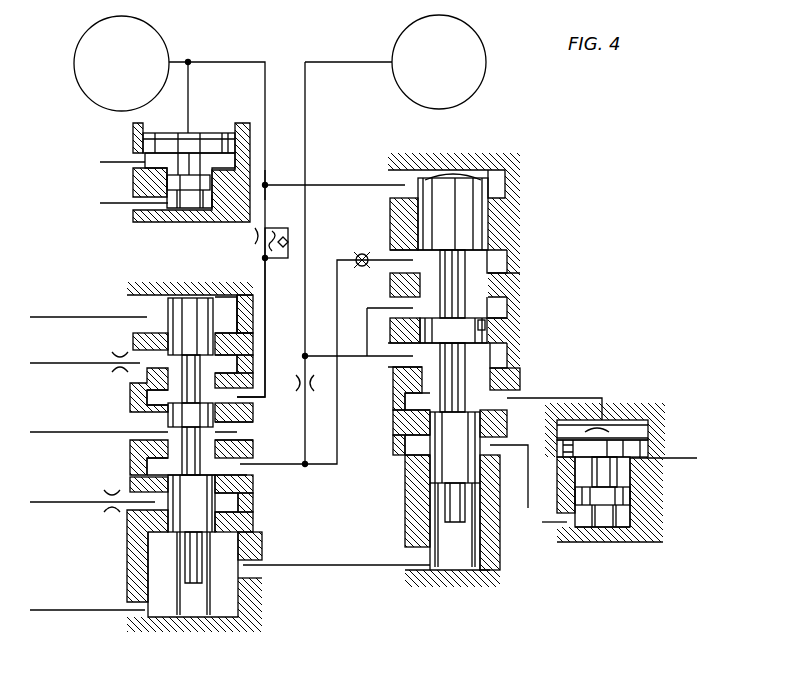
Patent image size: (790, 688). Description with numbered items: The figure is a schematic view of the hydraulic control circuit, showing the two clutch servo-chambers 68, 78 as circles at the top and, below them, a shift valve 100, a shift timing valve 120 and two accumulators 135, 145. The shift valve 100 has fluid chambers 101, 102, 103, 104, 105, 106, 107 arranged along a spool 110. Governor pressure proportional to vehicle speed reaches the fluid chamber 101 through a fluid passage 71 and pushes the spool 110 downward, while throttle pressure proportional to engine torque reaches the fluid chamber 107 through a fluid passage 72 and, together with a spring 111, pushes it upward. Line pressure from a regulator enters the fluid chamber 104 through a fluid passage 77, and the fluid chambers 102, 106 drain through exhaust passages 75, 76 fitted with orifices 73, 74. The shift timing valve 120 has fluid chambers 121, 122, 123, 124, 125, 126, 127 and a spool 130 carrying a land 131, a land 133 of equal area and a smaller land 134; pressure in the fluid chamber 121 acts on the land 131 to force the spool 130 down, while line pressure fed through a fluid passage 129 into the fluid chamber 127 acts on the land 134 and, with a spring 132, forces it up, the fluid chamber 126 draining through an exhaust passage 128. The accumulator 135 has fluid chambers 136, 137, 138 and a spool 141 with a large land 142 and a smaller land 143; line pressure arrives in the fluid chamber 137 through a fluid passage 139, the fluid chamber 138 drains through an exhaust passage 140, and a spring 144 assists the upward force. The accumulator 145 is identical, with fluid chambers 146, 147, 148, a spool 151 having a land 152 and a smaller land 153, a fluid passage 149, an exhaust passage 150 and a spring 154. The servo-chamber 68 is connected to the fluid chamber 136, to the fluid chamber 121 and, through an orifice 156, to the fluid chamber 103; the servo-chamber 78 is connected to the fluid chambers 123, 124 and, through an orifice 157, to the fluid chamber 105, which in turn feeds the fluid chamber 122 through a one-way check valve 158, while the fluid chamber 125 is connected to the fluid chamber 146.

The servo-chamber 68 is at (155, 43).
The servo-chamber 78 is at (473, 40).
The fluid passage 71 is at (63, 317).
The fluid passage 72 is at (92, 612).
The orifice 73 is at (120, 350).
The orifice 74 is at (112, 510).
The exhaust passage 75 is at (43, 363).
The exhaust passage 76 is at (62, 478).
The fluid passage 77 is at (60, 432).
The shift valve 100 is at (237, 660).
The fluid chamber 101 is at (225, 307).
The fluid chamber 102 is at (237, 360).
The fluid chamber 103 is at (157, 397).
The fluid chamber 104 is at (230, 432).
The fluid chamber 105 is at (153, 463).
The fluid chamber 106 is at (230, 502).
The fluid chamber 107 is at (157, 555).
The spool 110 is at (190, 312).
The spring 111 is at (175, 617).
The shift timing valve 120 is at (500, 618).
The fluid chamber 121 is at (497, 187).
The fluid chamber 122 is at (497, 260).
The fluid chamber 123 is at (497, 303).
The fluid chamber 124 is at (495, 355).
The fluid chamber 125 is at (407, 400).
The fluid chamber 126 is at (413, 447).
The fluid chamber 127 is at (452, 533).
The exhaust passage 128 is at (525, 497).
The fluid passage 129 is at (373, 565).
The spool 130 is at (448, 192).
The land 131 is at (473, 177).
The spring 132 is at (438, 573).
The land 133 is at (487, 330).
The land 134 is at (442, 460).
The accumulator 135 is at (115, 140).
The fluid chamber 136 is at (225, 133).
The fluid chamber 137 is at (215, 188).
The fluid chamber 138 is at (222, 210).
The fluid passage 139 is at (125, 162).
The exhaust passage 140 is at (125, 203).
The spool 141 is at (203, 147).
The land 142 is at (173, 143).
The land 143 is at (205, 208).
The spring 144 is at (178, 208).
The accumulator 145 is at (648, 388).
The fluid chamber 146 is at (640, 428).
The fluid chamber 147 is at (623, 470).
The fluid chamber 148 is at (627, 510).
The fluid passage 149 is at (675, 457).
The exhaust passage 150 is at (552, 527).
The spool 151 is at (597, 425).
The land 152 is at (557, 448).
The land 153 is at (637, 533).
The spring 154 is at (607, 527).
The orifice 156 is at (284, 233).
The orifice 157 is at (296, 372).
The check valve 158 is at (360, 255).